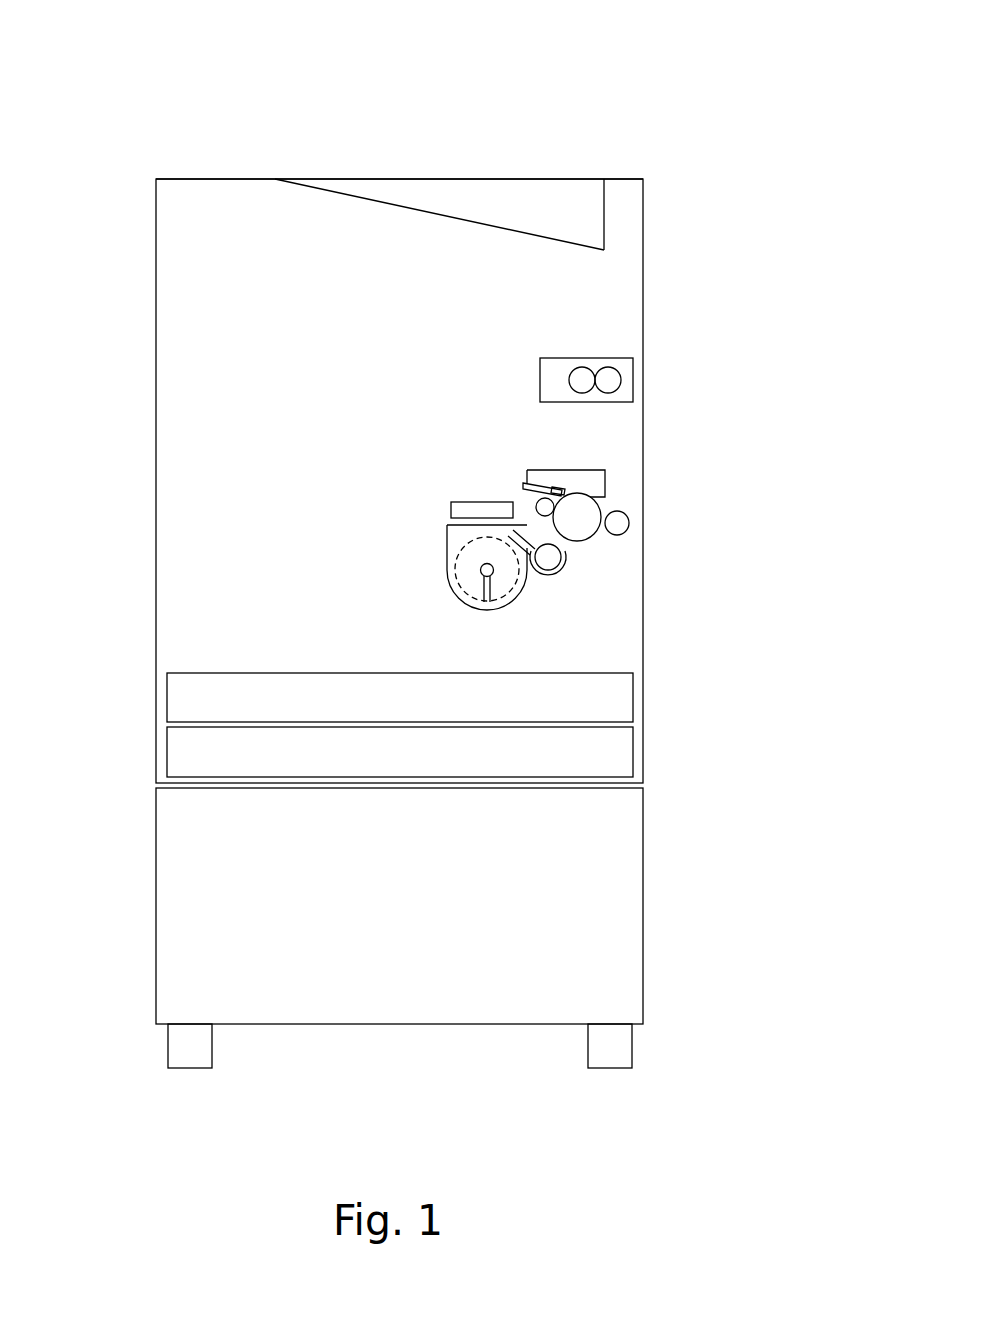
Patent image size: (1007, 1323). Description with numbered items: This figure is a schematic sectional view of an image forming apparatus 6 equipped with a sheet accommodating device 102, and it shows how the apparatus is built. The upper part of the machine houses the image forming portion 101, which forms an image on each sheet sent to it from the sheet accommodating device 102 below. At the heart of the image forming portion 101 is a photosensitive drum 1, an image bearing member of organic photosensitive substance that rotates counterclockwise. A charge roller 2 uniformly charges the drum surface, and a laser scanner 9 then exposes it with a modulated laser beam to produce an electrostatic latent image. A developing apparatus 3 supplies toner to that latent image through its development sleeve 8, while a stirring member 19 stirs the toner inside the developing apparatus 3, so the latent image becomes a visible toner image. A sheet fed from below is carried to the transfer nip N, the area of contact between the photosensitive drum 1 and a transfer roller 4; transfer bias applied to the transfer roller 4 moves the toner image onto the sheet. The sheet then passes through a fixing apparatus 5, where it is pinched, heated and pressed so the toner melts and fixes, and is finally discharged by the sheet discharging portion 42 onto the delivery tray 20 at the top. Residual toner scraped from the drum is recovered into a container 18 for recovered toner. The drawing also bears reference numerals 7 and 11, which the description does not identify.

The image forming apparatus 6 is at (628, 100).
The image forming portion 101 is at (267, 478).
The sheet accommodating device 102 is at (122, 797).
The delivery tray 20 is at (442, 212).
The sheet discharging portion 42 is at (604, 208).
The fixing apparatus 5 is at (633, 380).
The laser scanner 9 is at (470, 508).
The developing apparatus 3 is at (447, 570).
The stirring member 19 is at (492, 587).
The development sleeve 8 is at (548, 562).
The photosensitive drum 1 is at (587, 535).
The charging roller 7 is at (548, 498).
The transfer roller 4 is at (620, 520).
The transfer nip N is at (605, 515).
The container for recovered toner 18 is at (590, 470).
The charge roller 2 is at (523, 487).
The foot 11 is at (610, 1060).